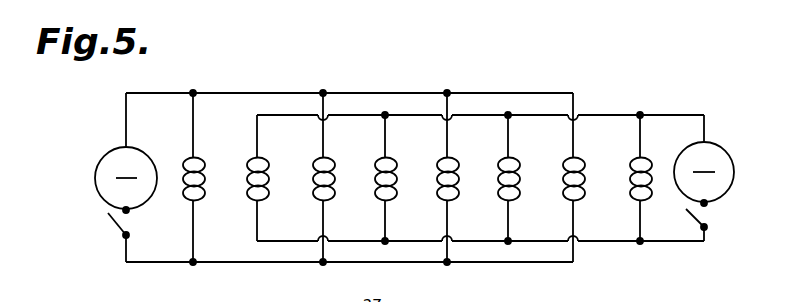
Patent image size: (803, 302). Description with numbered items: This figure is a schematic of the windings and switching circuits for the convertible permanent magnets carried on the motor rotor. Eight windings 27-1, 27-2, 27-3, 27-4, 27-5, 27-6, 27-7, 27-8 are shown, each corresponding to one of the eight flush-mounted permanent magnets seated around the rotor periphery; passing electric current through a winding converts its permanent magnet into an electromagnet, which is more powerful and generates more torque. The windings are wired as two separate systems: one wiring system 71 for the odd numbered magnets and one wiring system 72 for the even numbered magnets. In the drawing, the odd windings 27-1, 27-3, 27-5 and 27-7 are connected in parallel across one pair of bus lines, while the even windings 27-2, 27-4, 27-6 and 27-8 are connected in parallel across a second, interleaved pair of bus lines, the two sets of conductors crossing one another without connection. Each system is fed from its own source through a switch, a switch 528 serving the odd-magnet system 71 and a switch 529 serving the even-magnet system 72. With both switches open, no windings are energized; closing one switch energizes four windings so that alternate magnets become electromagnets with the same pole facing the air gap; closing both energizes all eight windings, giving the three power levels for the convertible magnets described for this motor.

The winding 27-1 is at (185, 163).
The winding 27-2 is at (249, 163).
The winding 27-3 is at (315, 163).
The winding 27-4 is at (377, 163).
The winding 27-5 is at (439, 163).
The winding 27-6 is at (500, 163).
The winding 27-7 is at (565, 163).
The winding 27-8 is at (632, 163).
The wiring system for odd numbered magnets 71 is at (282, 85).
The wiring system for even numbered magnets 72 is at (684, 73).
The switch 528 is at (129, 177).
The switch 529 is at (707, 178).